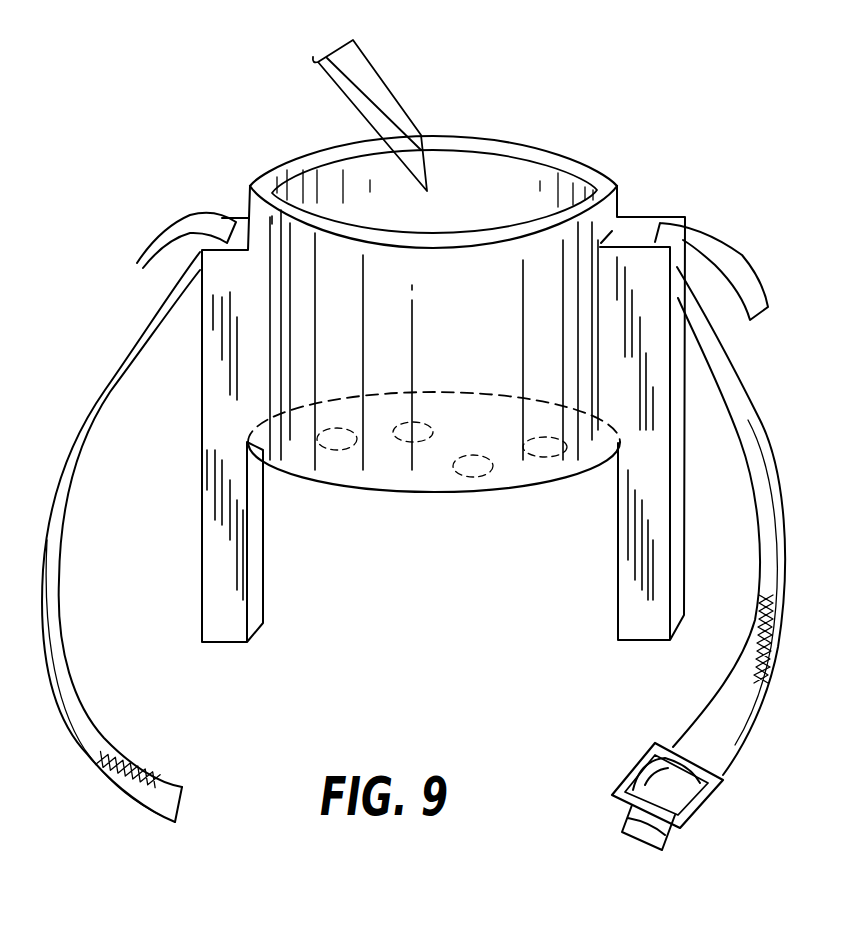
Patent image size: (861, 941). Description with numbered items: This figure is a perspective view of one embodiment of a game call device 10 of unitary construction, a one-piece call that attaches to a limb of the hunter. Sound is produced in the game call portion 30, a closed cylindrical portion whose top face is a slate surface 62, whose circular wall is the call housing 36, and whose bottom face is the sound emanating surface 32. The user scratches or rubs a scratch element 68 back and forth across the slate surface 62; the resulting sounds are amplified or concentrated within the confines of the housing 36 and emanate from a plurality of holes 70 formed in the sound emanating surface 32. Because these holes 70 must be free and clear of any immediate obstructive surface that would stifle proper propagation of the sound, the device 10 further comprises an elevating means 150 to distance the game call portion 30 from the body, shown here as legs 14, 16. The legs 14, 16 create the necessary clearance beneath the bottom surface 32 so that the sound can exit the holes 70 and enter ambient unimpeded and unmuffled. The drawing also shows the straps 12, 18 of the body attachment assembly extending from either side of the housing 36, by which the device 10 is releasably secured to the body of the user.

The call device 10 is at (413, 436).
The first strap 12 is at (139, 517).
The leg 14 is at (232, 633).
The leg 16 is at (633, 622).
The second strap with buckle 18 is at (698, 536).
The game call portion 30 is at (305, 136).
The sound emanating surface 32 is at (373, 477).
The call housing 36 is at (250, 362).
The slate surface 62 is at (505, 173).
The scratch element 68 is at (375, 92).
The holes 70 is at (424, 462).
The elevating means 150 is at (598, 584).